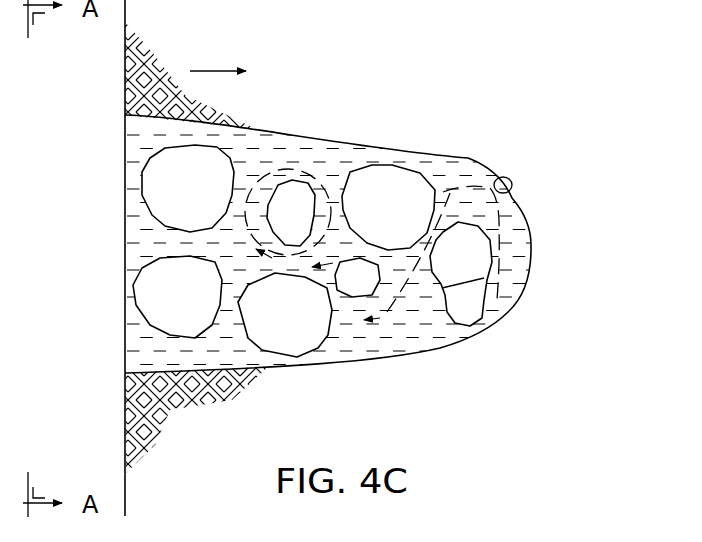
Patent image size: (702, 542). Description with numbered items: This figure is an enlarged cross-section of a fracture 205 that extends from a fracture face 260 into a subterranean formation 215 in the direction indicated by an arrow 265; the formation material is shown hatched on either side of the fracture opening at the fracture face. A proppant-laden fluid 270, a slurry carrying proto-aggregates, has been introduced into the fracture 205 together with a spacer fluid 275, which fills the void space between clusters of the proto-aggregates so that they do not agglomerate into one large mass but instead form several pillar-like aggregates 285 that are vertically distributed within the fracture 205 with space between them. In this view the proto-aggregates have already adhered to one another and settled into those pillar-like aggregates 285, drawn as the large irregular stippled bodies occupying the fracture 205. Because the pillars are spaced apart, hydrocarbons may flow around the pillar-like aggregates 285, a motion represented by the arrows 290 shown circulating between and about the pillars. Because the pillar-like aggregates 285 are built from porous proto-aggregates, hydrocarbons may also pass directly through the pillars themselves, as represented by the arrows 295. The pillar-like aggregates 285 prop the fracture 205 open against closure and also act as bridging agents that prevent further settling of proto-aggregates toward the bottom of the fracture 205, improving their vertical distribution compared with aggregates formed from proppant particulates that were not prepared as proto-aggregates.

The fracture 205 is at (511, 192).
The subterranean formation 215 is at (125, 416).
The fracture face 260 is at (123, 148).
The arrow 265 is at (214, 70).
The proppant-laden fluid 270 is at (363, 351).
The spacer fluid 275 is at (440, 330).
The pillar-like aggregates 285 is at (407, 167).
The arrows 290 is at (300, 169).
The arrows 295 is at (500, 285).